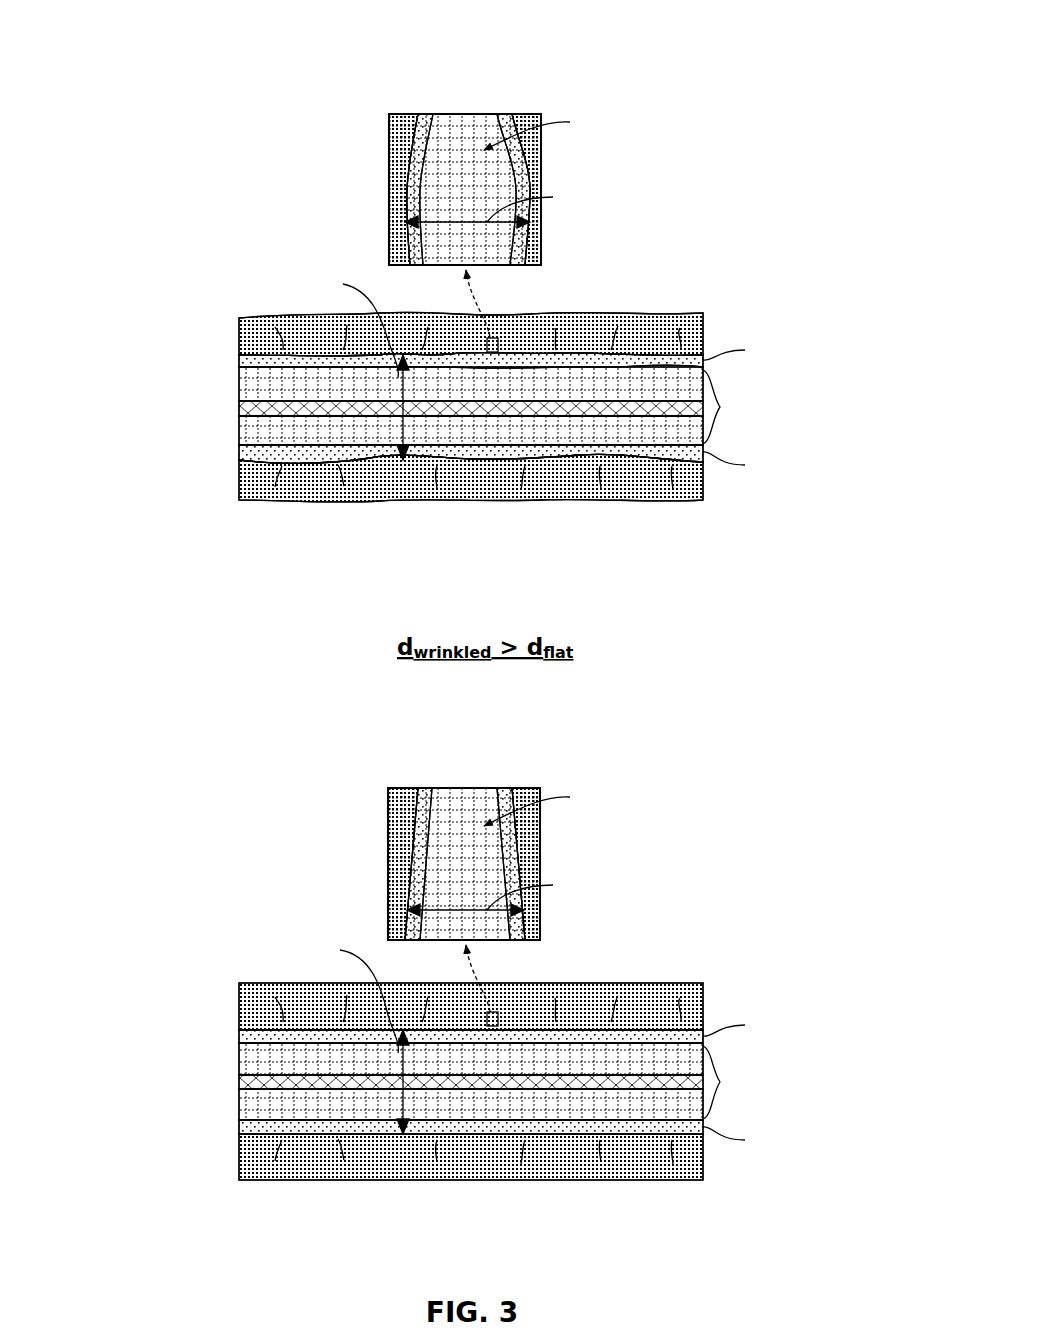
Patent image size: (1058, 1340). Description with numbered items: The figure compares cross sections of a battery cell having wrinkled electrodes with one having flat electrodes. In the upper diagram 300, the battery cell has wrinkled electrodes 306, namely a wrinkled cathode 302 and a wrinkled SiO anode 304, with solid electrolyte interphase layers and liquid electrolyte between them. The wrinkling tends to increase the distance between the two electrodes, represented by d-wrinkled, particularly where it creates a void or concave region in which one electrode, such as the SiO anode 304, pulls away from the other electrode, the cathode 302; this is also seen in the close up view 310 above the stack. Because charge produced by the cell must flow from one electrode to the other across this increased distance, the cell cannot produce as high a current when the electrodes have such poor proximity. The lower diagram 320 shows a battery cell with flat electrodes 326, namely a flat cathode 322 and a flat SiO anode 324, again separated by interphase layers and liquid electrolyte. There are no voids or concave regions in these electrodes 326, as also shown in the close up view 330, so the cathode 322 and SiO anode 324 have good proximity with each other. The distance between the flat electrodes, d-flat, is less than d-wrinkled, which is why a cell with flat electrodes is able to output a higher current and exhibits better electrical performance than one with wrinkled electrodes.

The diagram 300 is at (708, 49).
The wrinkled cathode 302 is at (703, 352).
The wrinkled SiO anode 304 is at (703, 466).
The wrinkled electrodes 306 is at (528, 168).
The close up view 310 is at (466, 113).
The diagram 320 is at (752, 726).
The flat cathode 322 is at (703, 1028).
The flat SiO anode 324 is at (703, 1140).
The flat electrodes 326 is at (528, 856).
The close up view 330 is at (466, 788).